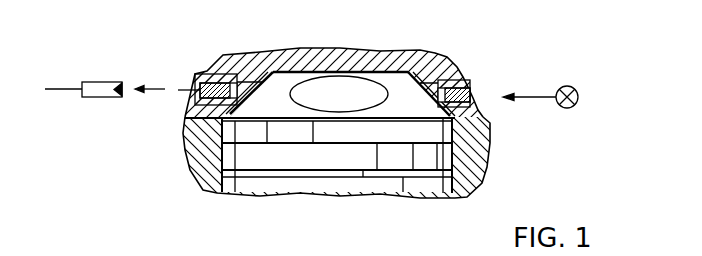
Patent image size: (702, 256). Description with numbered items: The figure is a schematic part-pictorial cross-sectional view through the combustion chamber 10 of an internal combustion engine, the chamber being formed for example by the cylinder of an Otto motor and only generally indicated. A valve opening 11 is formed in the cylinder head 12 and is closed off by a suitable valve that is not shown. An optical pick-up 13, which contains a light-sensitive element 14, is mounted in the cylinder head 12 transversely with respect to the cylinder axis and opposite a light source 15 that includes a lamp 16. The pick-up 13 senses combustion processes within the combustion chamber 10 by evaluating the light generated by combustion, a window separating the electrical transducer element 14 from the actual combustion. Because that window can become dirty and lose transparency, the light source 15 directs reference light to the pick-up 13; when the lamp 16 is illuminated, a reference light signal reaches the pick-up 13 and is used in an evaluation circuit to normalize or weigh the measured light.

The combustion chamber 10 is at (418, 133).
The valve opening 11 is at (342, 95).
The cylinder head 12 is at (298, 58).
The optical pick-up 13 is at (213, 80).
The light-sensitive element 14 is at (98, 90).
The light source 15 is at (455, 79).
The lamp 16 is at (567, 86).